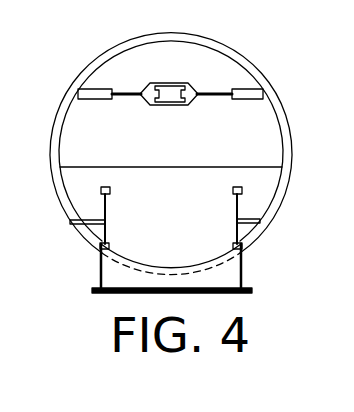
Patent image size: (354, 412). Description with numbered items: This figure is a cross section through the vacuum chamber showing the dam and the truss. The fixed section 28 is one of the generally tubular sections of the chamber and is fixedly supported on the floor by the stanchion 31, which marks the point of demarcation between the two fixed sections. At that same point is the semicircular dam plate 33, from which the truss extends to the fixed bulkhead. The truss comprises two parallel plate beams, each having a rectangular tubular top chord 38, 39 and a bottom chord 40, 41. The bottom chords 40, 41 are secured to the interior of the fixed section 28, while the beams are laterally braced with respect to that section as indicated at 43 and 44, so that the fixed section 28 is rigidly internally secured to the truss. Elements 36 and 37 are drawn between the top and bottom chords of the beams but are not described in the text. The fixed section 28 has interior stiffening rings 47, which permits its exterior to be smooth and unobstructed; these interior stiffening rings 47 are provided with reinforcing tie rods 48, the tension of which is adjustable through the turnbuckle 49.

The fixed section 28 is at (289, 118).
The stanchion 31 is at (245, 270).
The semicircular dam plate 33 is at (262, 190).
The left support rod 36 is at (107, 205).
The right connector block 37 is at (233, 203).
The rectangular tubular top chord 38 is at (100, 189).
The rectangular tubular top chord 39 is at (243, 186).
The bottom chord 40 is at (106, 246).
The bottom chord 41 is at (233, 246).
The lateral brace 43 is at (92, 218).
The lateral brace 44 is at (246, 219).
The interior stiffening ring 47 is at (66, 117).
The reinforcing tie rod 48 is at (214, 92).
The turnbuckle 49 is at (179, 83).